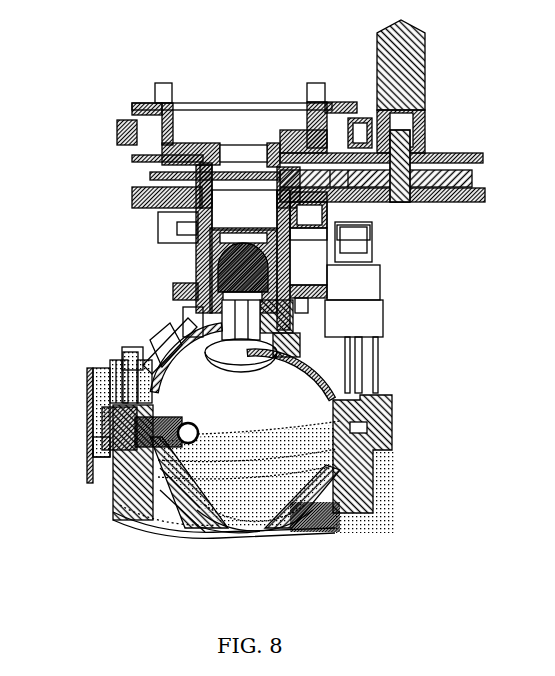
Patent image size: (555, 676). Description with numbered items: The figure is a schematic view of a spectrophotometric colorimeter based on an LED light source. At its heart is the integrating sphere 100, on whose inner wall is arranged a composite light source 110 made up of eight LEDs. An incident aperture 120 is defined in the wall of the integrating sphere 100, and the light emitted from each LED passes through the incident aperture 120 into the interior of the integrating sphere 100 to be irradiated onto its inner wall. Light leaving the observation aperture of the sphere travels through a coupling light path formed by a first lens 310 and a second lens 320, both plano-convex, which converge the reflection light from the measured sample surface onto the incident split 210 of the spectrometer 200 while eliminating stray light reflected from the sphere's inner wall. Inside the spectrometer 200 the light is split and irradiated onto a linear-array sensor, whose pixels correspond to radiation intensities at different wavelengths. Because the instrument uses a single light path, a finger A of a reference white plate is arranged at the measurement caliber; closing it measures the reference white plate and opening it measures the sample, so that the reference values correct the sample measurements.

The integrating sphere 100 is at (302, 413).
The composite light source 110 is at (152, 410).
The incident aperture 120 is at (328, 422).
The spectrometer 200 is at (193, 153).
The incident split 210 is at (243, 145).
The first lens 310 is at (245, 167).
The second lens 320 is at (238, 265).
The finger of a reference white plate A is at (227, 533).